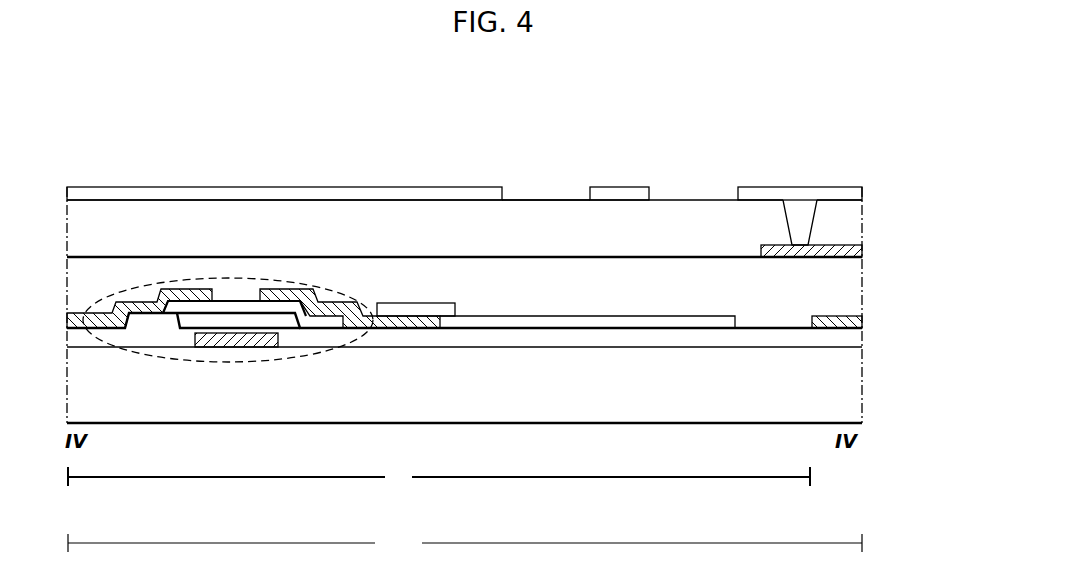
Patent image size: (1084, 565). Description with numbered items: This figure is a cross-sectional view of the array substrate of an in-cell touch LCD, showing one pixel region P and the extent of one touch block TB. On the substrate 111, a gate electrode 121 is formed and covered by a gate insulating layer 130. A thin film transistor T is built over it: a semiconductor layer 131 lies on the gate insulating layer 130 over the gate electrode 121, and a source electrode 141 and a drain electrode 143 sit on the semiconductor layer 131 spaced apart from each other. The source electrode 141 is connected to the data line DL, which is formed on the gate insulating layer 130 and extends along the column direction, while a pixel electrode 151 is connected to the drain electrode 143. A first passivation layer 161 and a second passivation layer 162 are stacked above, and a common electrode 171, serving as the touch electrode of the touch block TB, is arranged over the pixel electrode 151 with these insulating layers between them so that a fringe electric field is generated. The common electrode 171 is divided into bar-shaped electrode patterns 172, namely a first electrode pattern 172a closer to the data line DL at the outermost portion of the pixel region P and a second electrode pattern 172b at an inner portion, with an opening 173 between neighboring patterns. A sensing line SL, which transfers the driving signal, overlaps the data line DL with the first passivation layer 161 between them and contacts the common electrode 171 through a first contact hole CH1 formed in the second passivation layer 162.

The substrate 111 is at (848, 395).
The gate electrode 121 is at (233, 343).
The gate insulating layer 130 is at (848, 337).
The semiconductor layer 131 is at (185, 308).
The source electrode 141 is at (183, 290).
The drain electrode 143 is at (275, 290).
The pixel electrode 151 is at (583, 319).
The first passivation layer 161 is at (848, 298).
The second passivation layer 162 is at (848, 235).
The common electrode 171 is at (222, 185).
The electrode patterns 172 is at (795, 122).
The first electrode pattern 172a is at (797, 192).
The second electrode pattern 172b is at (623, 190).
The opening 173 is at (547, 178).
The first contact hole CH1 is at (806, 212).
The sensing line SL is at (807, 258).
The data line DL is at (825, 330).
The thin film transistor T is at (298, 357).
The pixel region P is at (439, 476).
The touch block TB is at (465, 543).